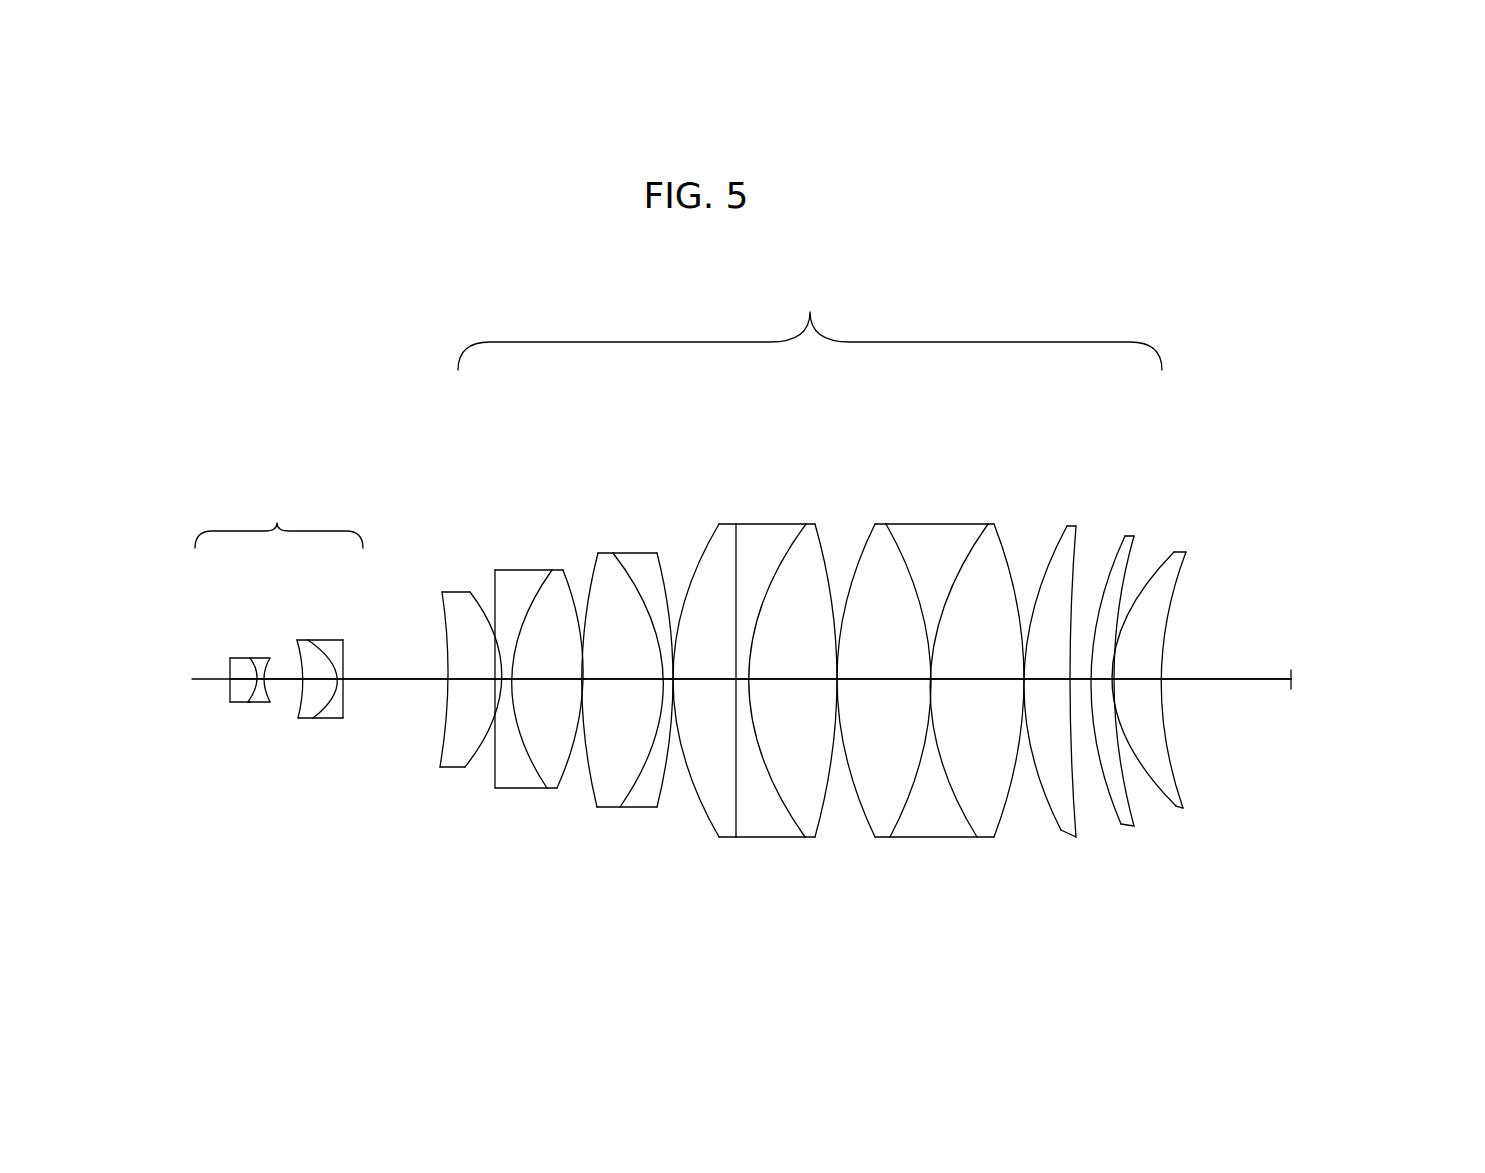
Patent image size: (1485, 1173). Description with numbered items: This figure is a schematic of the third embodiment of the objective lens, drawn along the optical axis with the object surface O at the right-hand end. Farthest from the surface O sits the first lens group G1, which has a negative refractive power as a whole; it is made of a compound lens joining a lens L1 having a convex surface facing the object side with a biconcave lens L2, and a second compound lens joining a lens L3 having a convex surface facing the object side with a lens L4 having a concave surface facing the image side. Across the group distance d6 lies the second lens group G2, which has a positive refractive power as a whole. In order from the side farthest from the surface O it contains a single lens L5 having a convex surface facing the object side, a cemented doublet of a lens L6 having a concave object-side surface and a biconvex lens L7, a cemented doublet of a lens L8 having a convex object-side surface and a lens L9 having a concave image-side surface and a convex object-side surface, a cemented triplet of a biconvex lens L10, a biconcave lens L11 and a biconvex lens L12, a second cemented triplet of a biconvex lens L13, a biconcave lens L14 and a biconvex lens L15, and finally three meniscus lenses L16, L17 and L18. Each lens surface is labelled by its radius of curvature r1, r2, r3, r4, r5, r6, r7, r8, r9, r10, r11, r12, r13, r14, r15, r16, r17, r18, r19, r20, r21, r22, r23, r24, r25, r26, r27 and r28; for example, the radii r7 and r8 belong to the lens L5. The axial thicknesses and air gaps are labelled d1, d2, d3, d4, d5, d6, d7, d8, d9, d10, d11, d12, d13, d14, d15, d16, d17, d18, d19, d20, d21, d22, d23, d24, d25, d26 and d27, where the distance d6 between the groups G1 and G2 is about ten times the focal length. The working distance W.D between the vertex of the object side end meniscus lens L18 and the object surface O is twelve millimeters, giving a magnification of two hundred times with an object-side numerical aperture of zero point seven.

The first lens group G1 is at (263, 637).
The second lens group G2 is at (833, 603).
The lens L1 is at (210, 672).
The biconcave lens L2 is at (256, 669).
The lens L3 is at (302, 676).
The lens L4 is at (336, 676).
The single lens L5 is at (455, 676).
The lens L6 is at (511, 672).
The biconvex lens L7 is at (559, 671).
The lens L8 is at (599, 689).
The lens L9 is at (643, 688).
The biconvex lens L10 is at (698, 685).
The biconcave lens L11 is at (770, 681).
The biconvex lens L12 is at (806, 681).
The biconvex lens L13 is at (884, 667).
The biconcave lens L14 is at (937, 668).
The biconvex lens L15 is at (985, 679).
The meniscus lens L16 is at (1059, 691).
The meniscus lens L17 is at (1125, 683).
The object side end meniscus lens L18 is at (1185, 674).
The radius of curvature r1 is at (230, 692).
The radius of curvature r2 is at (248, 702).
The radius of curvature r3 is at (268, 703).
The radius of curvature r4 is at (297, 718).
The radius of curvature r5 is at (323, 719).
The radius of curvature r6 is at (344, 714).
The radius of curvature r7 is at (440, 762).
The radius of curvature r8 is at (466, 762).
The radius of curvature r9 is at (494, 786).
The radius of curvature r10 is at (545, 786).
The radius of curvature r11 is at (560, 786).
The radius of curvature r12 is at (596, 808).
The radius of curvature r13 is at (620, 806).
The radius of curvature r14 is at (656, 808).
The radius of curvature r15 is at (700, 812).
The radius of curvature r16 is at (738, 820).
The radius of curvature r17 is at (778, 813).
The radius of curvature r18 is at (815, 817).
The radius of curvature r19 is at (867, 813).
The radius of curvature r20 is at (894, 813).
The radius of curvature r21 is at (957, 806).
The radius of curvature r22 is at (1008, 817).
The radius of curvature r23 is at (1045, 812).
The radius of curvature r24 is at (1076, 835).
The radius of curvature r25 is at (1112, 815).
The radius of curvature r26 is at (1133, 812).
The radius of curvature r27 is at (1166, 795).
The radius of curvature r28 is at (1185, 790).
The lens thickness d1 is at (250, 673).
The lens thickness d2 is at (252, 670).
The lens distance d3 is at (286, 679).
The lens thickness d4 is at (318, 676).
The lens thickness d5 is at (340, 684).
The lens distance d6 is at (406, 677).
The lens thickness d7 is at (468, 677).
The lens distance d8 is at (503, 681).
The lens thickness d9 is at (510, 688).
The lens thickness d10 is at (545, 678).
The lens distance d11 is at (583, 684).
The lens thickness d12 is at (643, 680).
The lens thickness d13 is at (663, 679).
The lens distance d14 is at (674, 684).
The lens thickness d15 is at (702, 677).
The lens thickness d16 is at (750, 685).
The lens thickness d17 is at (784, 677).
The lens distance d18 is at (836, 677).
The lens thickness d19 is at (884, 677).
The lens thickness d20 is at (928, 683).
The lens thickness d21 is at (972, 677).
The lens distance d22 is at (1024, 683).
The lens thickness d23 is at (1047, 677).
The lens distance d24 is at (1071, 683).
The lens thickness d25 is at (1091, 678).
The lens distance d26 is at (1114, 683).
The lens thickness d27 is at (1143, 677).
The working distance W.D is at (1226, 663).
The surface of an object O is at (1371, 691).